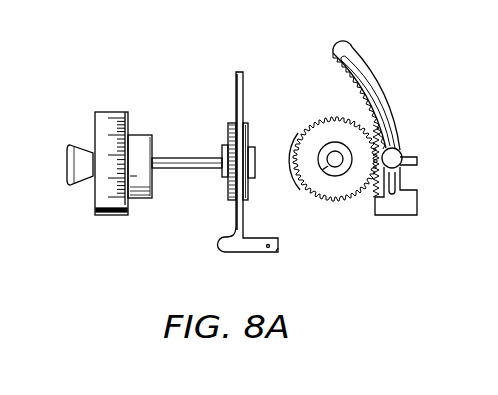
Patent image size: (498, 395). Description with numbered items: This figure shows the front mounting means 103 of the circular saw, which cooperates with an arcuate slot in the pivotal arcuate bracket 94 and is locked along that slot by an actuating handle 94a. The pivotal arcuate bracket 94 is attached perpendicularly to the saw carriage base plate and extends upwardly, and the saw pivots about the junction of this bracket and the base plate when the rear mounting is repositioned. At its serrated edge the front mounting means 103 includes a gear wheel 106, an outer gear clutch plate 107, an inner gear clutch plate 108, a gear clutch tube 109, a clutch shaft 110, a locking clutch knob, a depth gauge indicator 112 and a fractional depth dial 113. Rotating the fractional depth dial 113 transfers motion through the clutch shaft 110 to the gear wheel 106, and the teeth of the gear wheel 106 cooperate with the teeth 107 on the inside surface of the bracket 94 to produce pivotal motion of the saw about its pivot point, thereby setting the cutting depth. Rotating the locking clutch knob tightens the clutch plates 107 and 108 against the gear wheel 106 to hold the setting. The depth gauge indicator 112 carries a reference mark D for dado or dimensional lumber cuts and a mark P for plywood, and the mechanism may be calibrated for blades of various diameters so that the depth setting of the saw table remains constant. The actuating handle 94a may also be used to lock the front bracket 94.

The pivotal arcuate bracket 94 is at (244, 90).
The actuating handle 94a is at (393, 150).
The front mounting means 103 is at (277, 252).
The gear wheel 106 is at (232, 123).
The outer gear clutch plate 107 is at (254, 147).
The inner gear clutch plate 108 is at (224, 150).
The gear clutch tube 109 is at (202, 168).
The clutch shaft 110 is at (331, 168).
The depth gauge indicator 112 is at (144, 135).
The fractional depth dial 113 is at (108, 112).